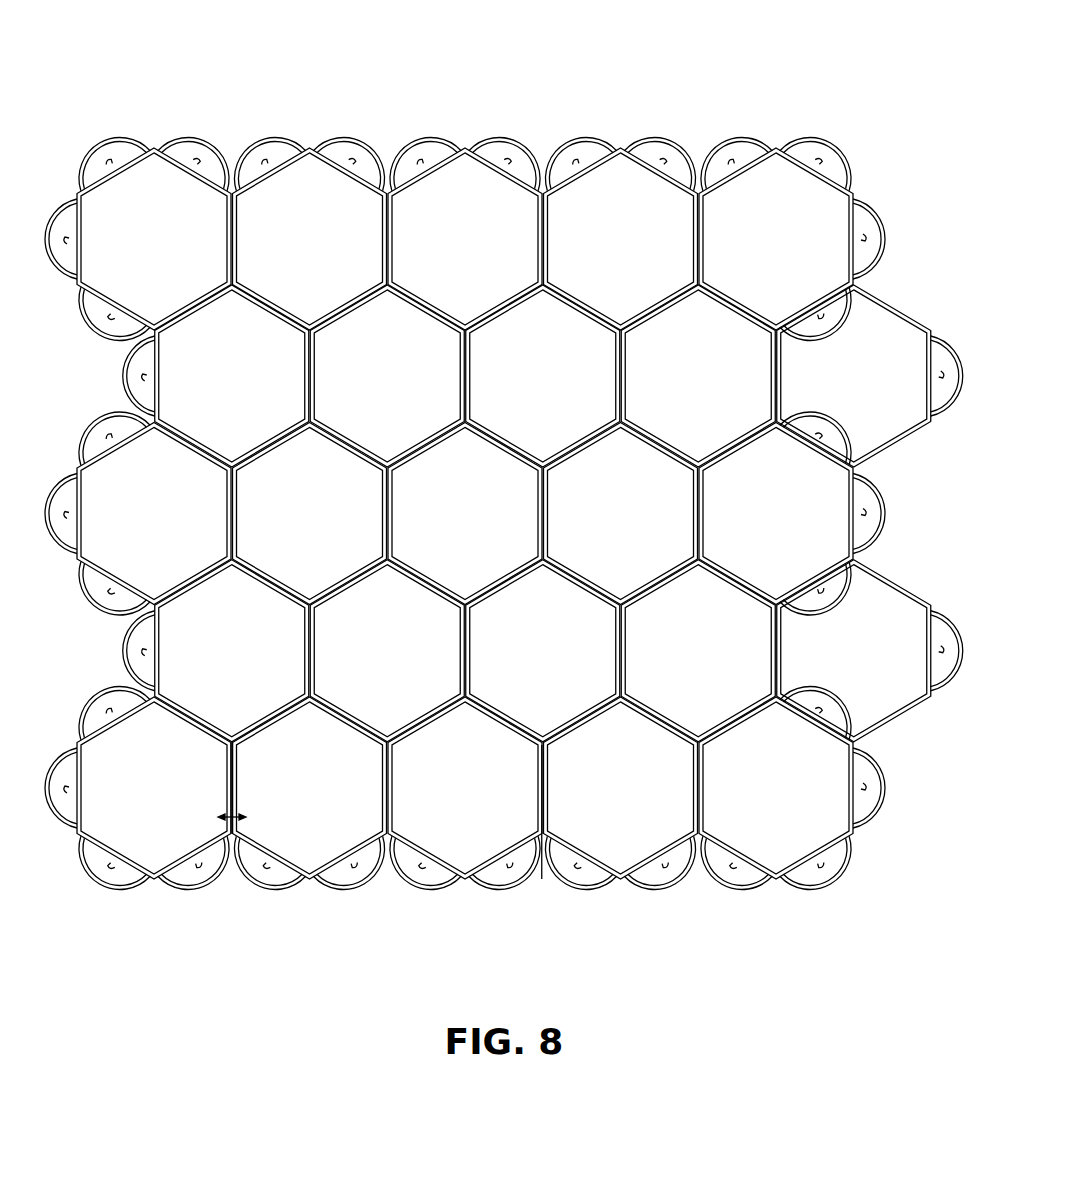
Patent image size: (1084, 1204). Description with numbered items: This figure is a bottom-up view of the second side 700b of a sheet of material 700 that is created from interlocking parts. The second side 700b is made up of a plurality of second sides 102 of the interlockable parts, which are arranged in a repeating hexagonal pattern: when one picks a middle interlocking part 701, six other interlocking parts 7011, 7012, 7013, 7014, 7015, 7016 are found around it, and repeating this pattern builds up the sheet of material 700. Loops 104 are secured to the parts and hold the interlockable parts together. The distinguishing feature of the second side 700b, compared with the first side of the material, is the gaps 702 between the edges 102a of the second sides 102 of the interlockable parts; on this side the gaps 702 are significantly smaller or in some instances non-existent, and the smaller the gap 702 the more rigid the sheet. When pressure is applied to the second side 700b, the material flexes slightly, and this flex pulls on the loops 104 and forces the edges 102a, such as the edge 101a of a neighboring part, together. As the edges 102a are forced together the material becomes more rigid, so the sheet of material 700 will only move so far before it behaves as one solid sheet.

The sheet of material 700 is at (665, 97).
The second side of the sheet of material 700b is at (289, 95).
The second side of interlockable part 102 is at (138, 245).
The interlocking part 7011 is at (364, 390).
The interlocking part 7012 is at (519, 390).
The interlocking part 7013 is at (599, 524).
The interlocking part 7014 is at (519, 662).
The interlocking part 7015 is at (364, 662).
The interlocking part 7016 is at (287, 524).
The middle interlocking part 701 is at (448, 524).
The edges of the second side 102a is at (226, 817).
The side edge of tile 101 101a is at (239, 818).
The gap 702 is at (232, 843).
The loops 104 is at (517, 885).